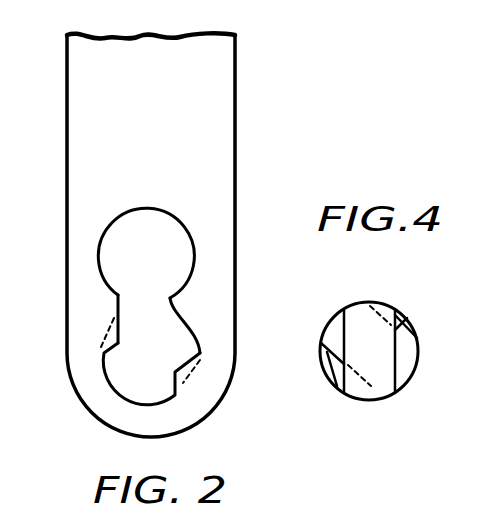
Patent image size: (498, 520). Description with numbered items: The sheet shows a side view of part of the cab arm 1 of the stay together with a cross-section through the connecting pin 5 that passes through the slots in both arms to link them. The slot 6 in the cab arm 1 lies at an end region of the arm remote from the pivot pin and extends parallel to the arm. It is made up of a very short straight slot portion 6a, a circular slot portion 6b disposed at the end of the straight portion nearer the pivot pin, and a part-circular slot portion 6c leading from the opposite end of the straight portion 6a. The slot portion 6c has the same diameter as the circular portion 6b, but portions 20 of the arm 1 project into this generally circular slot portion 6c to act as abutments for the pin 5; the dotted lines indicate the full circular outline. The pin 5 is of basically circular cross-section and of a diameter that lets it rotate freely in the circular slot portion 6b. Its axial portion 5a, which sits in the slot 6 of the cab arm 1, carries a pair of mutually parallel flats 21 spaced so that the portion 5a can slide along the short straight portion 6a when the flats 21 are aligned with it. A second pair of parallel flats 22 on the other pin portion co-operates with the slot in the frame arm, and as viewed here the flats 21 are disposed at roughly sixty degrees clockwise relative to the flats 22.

In FIG. 2, the cab arm 1 is at (207, 87).
In FIG. 2, the slot 6 is at (107, 293).
In FIG. 2, the straight slot portion 6a is at (153, 302).
In FIG. 2, the circular slot portion 6b is at (157, 240).
In FIG. 2, the part-circular slot portion 6c is at (142, 370).
In FIG. 2, the projecting portions of the arm 20 is at (108, 328).
In FIG. 4, the connecting pin 5 is at (362, 300).
In FIG. 4, the axial pin portion 5a is at (378, 365).
In FIG. 4, the flats 21 is at (412, 312).
In FIG. 4, the flats 22 is at (400, 330).